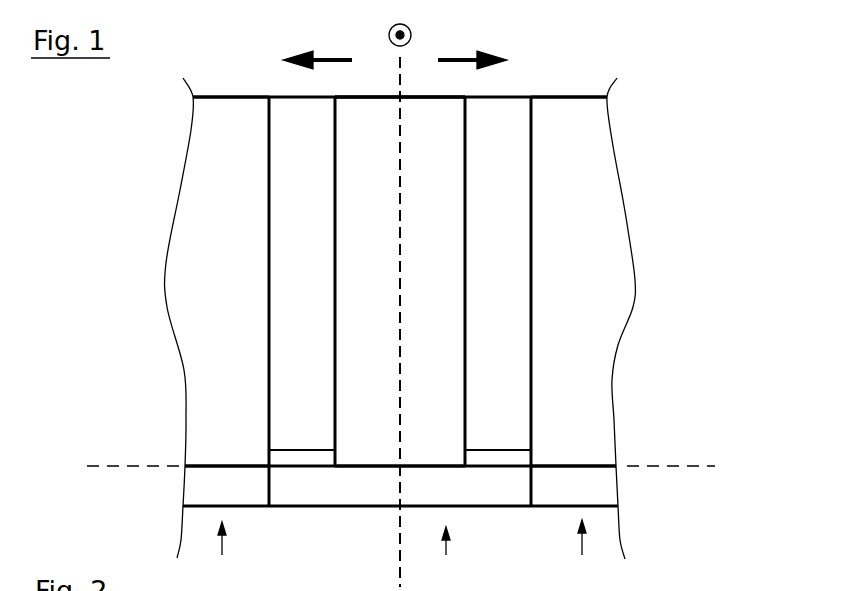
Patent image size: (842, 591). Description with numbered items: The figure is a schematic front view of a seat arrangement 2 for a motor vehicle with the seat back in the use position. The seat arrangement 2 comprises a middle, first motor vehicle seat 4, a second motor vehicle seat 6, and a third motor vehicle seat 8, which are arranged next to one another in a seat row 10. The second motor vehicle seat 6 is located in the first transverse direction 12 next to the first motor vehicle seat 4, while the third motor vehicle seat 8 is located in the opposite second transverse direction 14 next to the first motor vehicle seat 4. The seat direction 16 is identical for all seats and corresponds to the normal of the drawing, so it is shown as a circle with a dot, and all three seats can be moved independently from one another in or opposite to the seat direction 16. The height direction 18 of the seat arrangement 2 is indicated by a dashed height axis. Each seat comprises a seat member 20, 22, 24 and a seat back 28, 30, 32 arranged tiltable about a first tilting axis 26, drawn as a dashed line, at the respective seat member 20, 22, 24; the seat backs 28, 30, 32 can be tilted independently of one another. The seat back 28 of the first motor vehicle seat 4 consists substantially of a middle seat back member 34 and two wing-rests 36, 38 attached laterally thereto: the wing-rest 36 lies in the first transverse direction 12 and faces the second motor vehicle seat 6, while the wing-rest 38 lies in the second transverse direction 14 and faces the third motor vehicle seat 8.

The seat arrangement 2 is at (708, 91).
The first motor vehicle seat 4 is at (446, 556).
The second motor vehicle seat 6 is at (582, 549).
The third motor vehicle seat 8 is at (222, 553).
The seat row 10 is at (658, 305).
The first transverse direction 12 is at (463, 56).
The second transverse direction 14 is at (331, 56).
The seat direction 16 is at (389, 34).
The height direction 18 is at (398, 563).
The seat member 20 is at (478, 499).
The seat member 22 is at (581, 499).
The seat member 24 is at (244, 497).
The first tilting axis 26 is at (665, 467).
The seat back 28 is at (431, 168).
The seat back 30 is at (610, 221).
The seat back 32 is at (190, 222).
The middle seat back member 34 is at (444, 263).
The wing-rest 36 is at (514, 263).
The wing-rest 38 is at (320, 263).